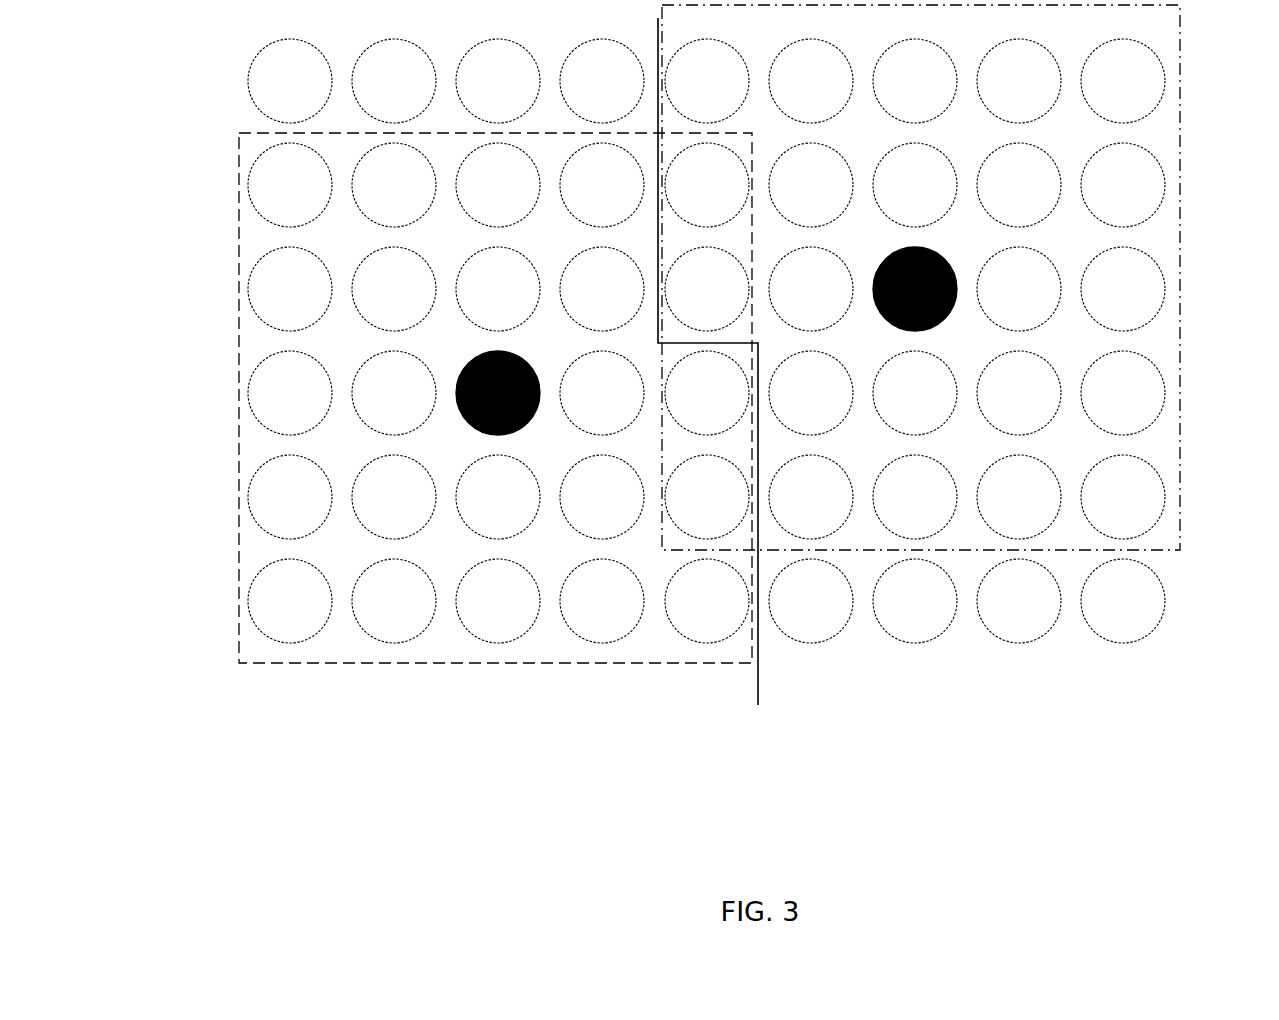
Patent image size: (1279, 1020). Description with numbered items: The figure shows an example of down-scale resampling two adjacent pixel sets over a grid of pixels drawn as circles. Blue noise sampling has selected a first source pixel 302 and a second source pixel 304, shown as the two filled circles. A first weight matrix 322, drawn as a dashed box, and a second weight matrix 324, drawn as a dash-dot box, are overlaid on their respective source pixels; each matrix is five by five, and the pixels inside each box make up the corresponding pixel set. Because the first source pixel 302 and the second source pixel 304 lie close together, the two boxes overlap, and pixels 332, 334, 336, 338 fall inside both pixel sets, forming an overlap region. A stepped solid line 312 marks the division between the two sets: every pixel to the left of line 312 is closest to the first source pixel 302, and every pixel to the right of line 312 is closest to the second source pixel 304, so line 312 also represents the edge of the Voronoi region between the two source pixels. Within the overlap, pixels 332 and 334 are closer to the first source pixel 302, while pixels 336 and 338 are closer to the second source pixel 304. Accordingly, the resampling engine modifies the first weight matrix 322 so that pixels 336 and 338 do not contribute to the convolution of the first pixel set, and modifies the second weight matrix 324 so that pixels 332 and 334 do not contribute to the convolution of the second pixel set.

The first source pixel 302 is at (492, 352).
The second source pixel 304 is at (912, 247).
The line 312 is at (730, 382).
The first weight matrix 322 is at (495, 422).
The second weight matrix 324 is at (965, 277).
The pixel 332 is at (707, 393).
The pixel 334 is at (707, 497).
The pixel 336 is at (707, 185).
The pixel 338 is at (707, 289).